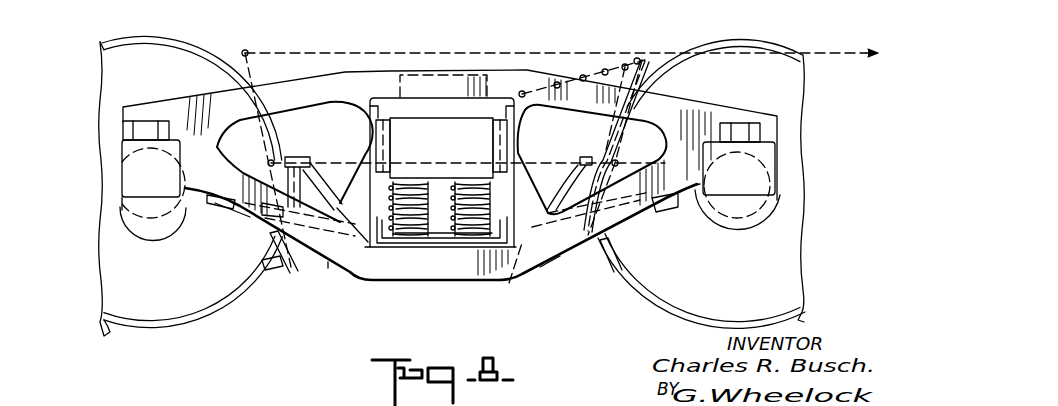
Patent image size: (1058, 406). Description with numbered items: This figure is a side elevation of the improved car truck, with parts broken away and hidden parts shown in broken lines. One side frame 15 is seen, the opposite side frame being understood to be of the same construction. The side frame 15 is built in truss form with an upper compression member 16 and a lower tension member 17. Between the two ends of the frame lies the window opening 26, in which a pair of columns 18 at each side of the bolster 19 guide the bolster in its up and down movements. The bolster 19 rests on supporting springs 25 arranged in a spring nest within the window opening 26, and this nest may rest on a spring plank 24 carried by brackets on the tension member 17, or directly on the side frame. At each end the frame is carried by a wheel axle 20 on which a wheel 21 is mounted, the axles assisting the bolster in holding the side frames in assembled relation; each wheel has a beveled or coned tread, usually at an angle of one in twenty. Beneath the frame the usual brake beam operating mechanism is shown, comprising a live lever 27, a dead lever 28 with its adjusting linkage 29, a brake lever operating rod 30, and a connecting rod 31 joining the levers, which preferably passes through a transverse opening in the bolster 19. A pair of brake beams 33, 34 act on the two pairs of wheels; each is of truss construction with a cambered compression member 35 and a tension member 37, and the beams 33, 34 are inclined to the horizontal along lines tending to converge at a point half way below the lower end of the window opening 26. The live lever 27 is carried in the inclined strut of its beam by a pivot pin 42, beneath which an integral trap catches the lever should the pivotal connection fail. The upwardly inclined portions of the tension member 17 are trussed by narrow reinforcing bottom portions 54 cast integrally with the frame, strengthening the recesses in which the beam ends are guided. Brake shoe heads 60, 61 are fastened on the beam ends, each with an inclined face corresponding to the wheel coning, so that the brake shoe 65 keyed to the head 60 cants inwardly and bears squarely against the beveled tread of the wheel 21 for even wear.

The side frame 15 is at (549, 278).
The compression member 16 is at (291, 87).
The tension member 17 is at (387, 268).
The columns 18 is at (350, 119).
The bolster 19 is at (428, 123).
The wheel axles 20 is at (130, 224).
The wheels 21 is at (193, 50).
The spring plank 24 is at (443, 237).
The supporting springs 25 is at (465, 220).
The window opening 26 is at (508, 83).
The live lever 27 is at (254, 72).
The dead lever 28 is at (618, 161).
The adjusting linkage 29 is at (587, 76).
The brake lever operating rod 30 is at (324, 52).
The connecting rod 31 is at (348, 163).
The brake beam 33 is at (231, 216).
The brake beam 34 is at (668, 216).
The compression member 35 is at (328, 268).
The tension member 37 is at (216, 201).
The pivot pin 42 is at (272, 223).
The reinforcing bottom portions 54 is at (305, 262).
The brake shoe head 60 is at (323, 166).
The brake shoe head 61 is at (559, 172).
The brake shoe 65 is at (263, 270).